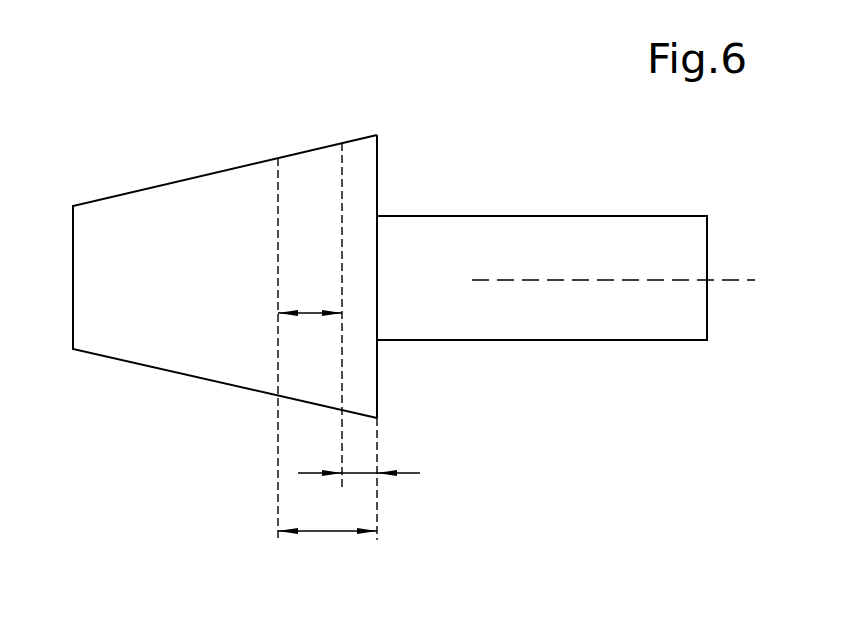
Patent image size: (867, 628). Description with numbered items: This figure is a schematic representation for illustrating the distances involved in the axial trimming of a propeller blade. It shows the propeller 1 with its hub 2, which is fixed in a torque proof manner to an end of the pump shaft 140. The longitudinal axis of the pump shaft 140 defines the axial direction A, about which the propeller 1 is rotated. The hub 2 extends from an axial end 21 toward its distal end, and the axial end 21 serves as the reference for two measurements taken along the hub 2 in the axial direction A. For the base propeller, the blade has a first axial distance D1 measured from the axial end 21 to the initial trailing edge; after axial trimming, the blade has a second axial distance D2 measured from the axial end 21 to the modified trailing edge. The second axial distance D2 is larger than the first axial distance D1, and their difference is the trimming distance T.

The propeller 1 is at (565, 143).
The hub 2 is at (178, 170).
The axial end 21 is at (378, 165).
The pump shaft 140 is at (622, 216).
The axial direction A is at (728, 282).
The trimming distance T is at (305, 313).
The first axial distance D1 is at (353, 473).
The second axial distance D2 is at (324, 531).